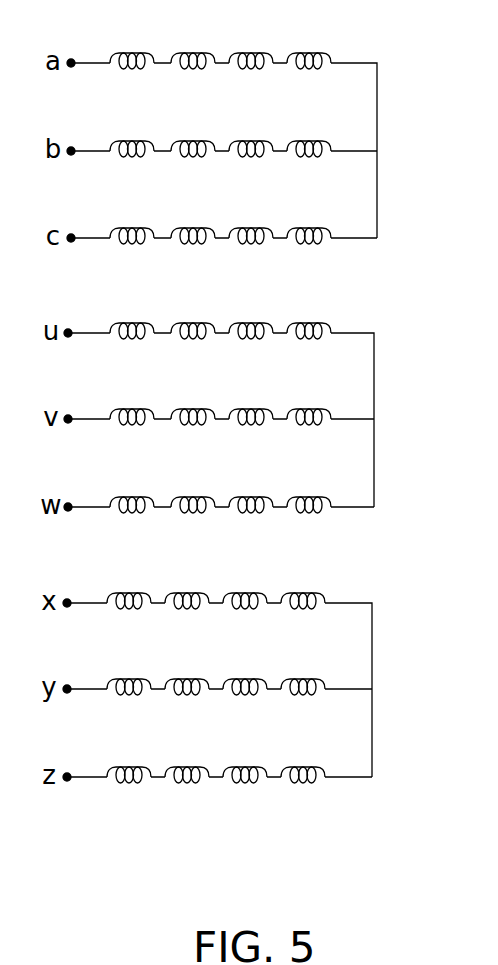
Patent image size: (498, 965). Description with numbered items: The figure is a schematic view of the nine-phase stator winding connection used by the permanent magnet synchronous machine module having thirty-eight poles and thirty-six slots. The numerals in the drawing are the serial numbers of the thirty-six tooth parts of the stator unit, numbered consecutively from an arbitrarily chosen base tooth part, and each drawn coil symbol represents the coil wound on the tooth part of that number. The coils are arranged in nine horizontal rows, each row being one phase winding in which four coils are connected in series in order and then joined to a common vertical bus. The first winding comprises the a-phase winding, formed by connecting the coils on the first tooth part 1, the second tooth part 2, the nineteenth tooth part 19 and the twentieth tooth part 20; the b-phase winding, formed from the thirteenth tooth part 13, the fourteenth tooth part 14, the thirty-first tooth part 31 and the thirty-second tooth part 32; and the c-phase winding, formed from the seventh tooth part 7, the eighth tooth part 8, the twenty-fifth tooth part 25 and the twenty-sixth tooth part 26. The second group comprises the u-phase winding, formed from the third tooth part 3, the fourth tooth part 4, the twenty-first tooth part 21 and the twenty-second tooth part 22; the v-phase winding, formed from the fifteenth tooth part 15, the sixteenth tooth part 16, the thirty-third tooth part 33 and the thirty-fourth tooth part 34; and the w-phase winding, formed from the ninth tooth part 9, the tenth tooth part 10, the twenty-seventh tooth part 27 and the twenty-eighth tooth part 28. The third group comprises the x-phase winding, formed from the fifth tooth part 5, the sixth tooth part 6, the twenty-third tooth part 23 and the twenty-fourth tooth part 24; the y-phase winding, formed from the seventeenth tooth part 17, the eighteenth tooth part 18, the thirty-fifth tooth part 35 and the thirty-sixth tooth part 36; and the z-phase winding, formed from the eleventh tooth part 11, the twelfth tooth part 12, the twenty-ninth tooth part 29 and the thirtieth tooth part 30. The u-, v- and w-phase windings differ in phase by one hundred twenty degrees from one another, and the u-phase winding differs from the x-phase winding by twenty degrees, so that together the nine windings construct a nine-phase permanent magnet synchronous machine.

The first tooth part 1 is at (132, 43).
The second tooth part 2 is at (193, 43).
The third tooth part 3 is at (132, 313).
The fourth tooth part 4 is at (193, 313).
The fifth tooth part 5 is at (129, 583).
The sixth tooth part 6 is at (187, 583).
The seventh tooth part 7 is at (132, 218).
The eighth tooth part 8 is at (193, 218).
The ninth tooth part 9 is at (132, 487).
The tenth tooth part 10 is at (193, 487).
The eleventh tooth part 11 is at (129, 757).
The twelfth tooth part 12 is at (187, 757).
The thirteenth tooth part 13 is at (132, 131).
The fourteenth tooth part 14 is at (193, 131).
The fifteenth tooth part 15 is at (132, 399).
The sixteenth tooth part 16 is at (193, 399).
The seventeenth tooth part 17 is at (129, 669).
The eighteenth tooth part 18 is at (187, 669).
The nineteenth tooth part 19 is at (251, 43).
The twentieth tooth part 20 is at (309, 43).
The twenty-first tooth part 21 is at (251, 313).
The twenty-second tooth part 22 is at (309, 313).
The twenty-third tooth part 23 is at (245, 583).
The twenty-fourth tooth part 24 is at (303, 583).
The twenty-fifth tooth part 25 is at (251, 218).
The twenty-sixth tooth part 26 is at (309, 218).
The twenty-seventh tooth part 27 is at (251, 487).
The twenty-eighth tooth part 28 is at (309, 487).
The twenty-ninth tooth part 29 is at (245, 757).
The thirtieth tooth part 30 is at (303, 757).
The thirty-first tooth part 31 is at (251, 131).
The thirty-second tooth part 32 is at (309, 131).
The thirty-third tooth part 33 is at (251, 399).
The thirty-fourth tooth part 34 is at (309, 399).
The thirty-fifth tooth part 35 is at (245, 669).
The thirty-sixth tooth part 36 is at (303, 669).